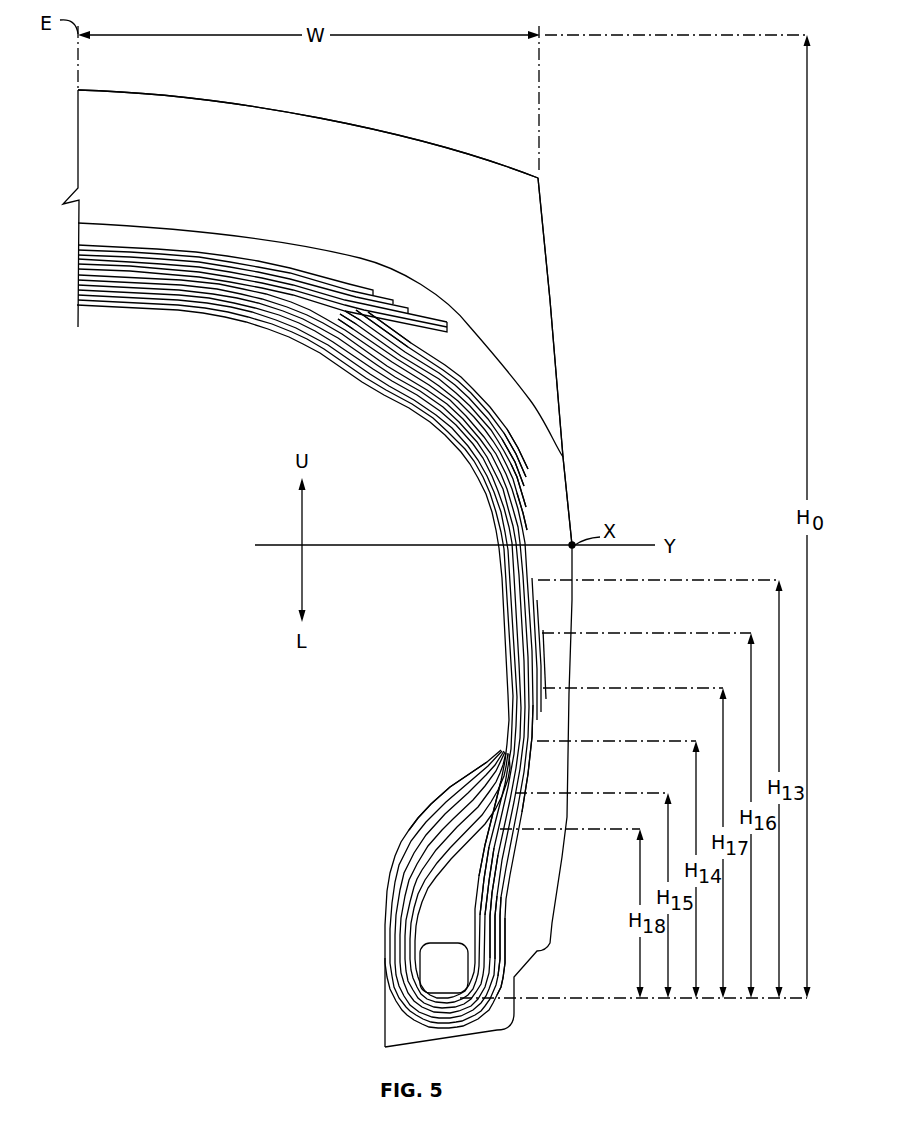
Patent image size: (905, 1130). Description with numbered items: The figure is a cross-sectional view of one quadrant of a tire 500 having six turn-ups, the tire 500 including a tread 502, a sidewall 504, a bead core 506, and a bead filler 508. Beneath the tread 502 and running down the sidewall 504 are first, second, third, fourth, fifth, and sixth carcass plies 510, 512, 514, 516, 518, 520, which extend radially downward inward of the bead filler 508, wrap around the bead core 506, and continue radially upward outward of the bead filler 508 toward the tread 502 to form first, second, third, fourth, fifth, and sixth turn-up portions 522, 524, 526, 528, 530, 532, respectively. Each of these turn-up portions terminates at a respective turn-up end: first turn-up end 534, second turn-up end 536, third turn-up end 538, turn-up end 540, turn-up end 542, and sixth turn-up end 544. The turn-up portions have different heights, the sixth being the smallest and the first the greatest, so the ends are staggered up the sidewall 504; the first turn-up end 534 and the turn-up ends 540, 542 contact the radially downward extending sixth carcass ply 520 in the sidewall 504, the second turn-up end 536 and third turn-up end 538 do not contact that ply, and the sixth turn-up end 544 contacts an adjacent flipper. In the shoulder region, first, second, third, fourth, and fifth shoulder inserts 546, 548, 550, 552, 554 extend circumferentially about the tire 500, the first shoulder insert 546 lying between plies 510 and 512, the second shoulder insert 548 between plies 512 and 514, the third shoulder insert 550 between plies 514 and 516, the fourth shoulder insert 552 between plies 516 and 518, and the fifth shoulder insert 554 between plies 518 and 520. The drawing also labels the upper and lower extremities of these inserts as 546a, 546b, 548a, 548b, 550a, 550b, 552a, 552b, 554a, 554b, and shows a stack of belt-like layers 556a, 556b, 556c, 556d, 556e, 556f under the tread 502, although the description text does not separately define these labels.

The tire 500 is at (636, 174).
The tread 502 is at (423, 140).
The sidewall 504 is at (584, 287).
The bead core 506 is at (428, 967).
The bead filler 508 is at (437, 917).
The first carcass ply 510 is at (95, 305).
The second carcass ply 512 is at (137, 300).
The third carcass ply 514 is at (157, 298).
The fourth carcass ply 516 is at (193, 297).
The fifth carcass ply 518 is at (220, 297).
The sixth carcass ply 520 is at (263, 297).
The first turn-up portion 522 is at (505, 990).
The second turn-up portion 524 is at (503, 982).
The third turn-up portion 526 is at (497, 953).
The fourth turn-up portion 528 is at (493, 933).
The fifth turn-up portion 530 is at (488, 908).
The sixth turn-up portion 532 is at (488, 887).
The first turn-up end 534 is at (542, 582).
The second turn-up end 536 is at (538, 740).
The third turn-up end 538 is at (520, 793).
The fifth turn-up end 540 is at (544, 632).
The fourth turn-up end 542 is at (544, 688).
The sixth turn-up end 544 is at (487, 830).
The first shoulder insert 546 is at (467, 443).
The shoulder insert layer upper end 546a is at (327, 343).
The shoulder insert layer lower end 546b is at (497, 528).
The second shoulder insert 548 is at (457, 412).
The shoulder insert layer upper end 548a is at (337, 310).
The shoulder insert layer lower end 548b is at (505, 508).
The third shoulder insert 550 is at (440, 383).
The shoulder insert layer upper end 550a is at (338, 322).
The shoulder insert layer lower end 550b is at (517, 487).
The fourth shoulder insert 552 is at (447, 380).
The shoulder insert layer upper end 552a is at (367, 313).
The shoulder insert layer lower end 552b is at (528, 470).
The fifth shoulder insert 554 is at (480, 403).
The shoulder insert layer upper end 554a is at (343, 317).
The shoulder insert layer lower end 554b is at (522, 478).
The belt ply 556a is at (90, 273).
The belt ply 556b is at (140, 268).
The belt ply 556c is at (170, 267).
The belt ply 556d is at (210, 268).
The belt ply 556e is at (248, 268).
The belt ply 556f is at (292, 268).